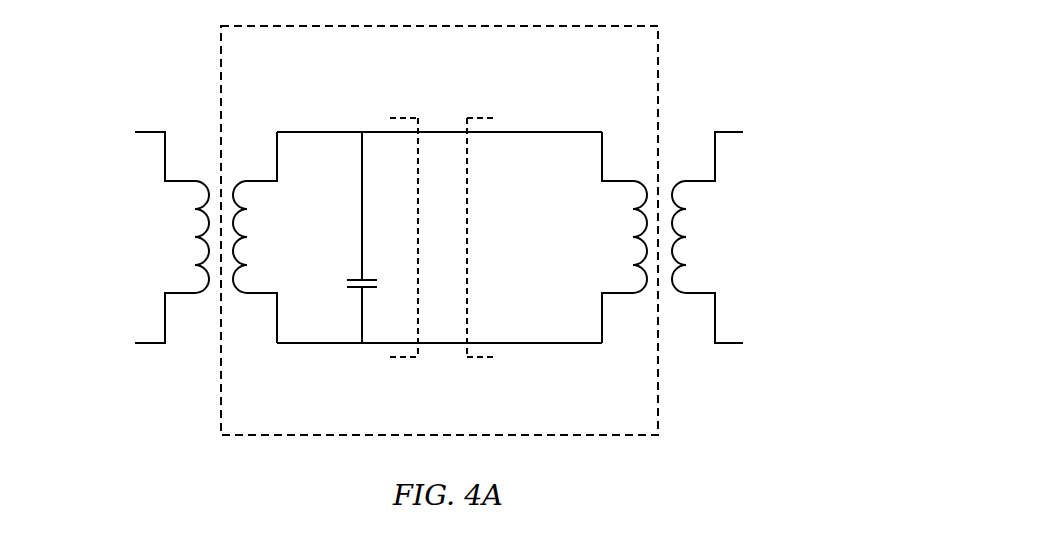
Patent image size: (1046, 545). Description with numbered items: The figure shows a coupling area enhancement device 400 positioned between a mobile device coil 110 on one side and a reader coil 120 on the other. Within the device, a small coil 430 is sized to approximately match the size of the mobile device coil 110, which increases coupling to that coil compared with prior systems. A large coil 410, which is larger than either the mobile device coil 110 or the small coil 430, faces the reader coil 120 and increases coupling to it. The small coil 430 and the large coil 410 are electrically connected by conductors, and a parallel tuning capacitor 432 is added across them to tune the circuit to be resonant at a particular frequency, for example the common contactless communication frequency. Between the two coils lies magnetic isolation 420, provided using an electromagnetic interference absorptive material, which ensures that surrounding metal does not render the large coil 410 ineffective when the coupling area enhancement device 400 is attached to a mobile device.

The coupling area enhancement device 400 is at (658, 68).
The mobile device coil 110 is at (178, 181).
The reader coil 120 is at (702, 181).
The small coil 430 is at (262, 181).
The tuning capacitor 432 is at (353, 290).
The large coil 410 is at (617, 181).
The magnetic isolation 420 is at (447, 370).